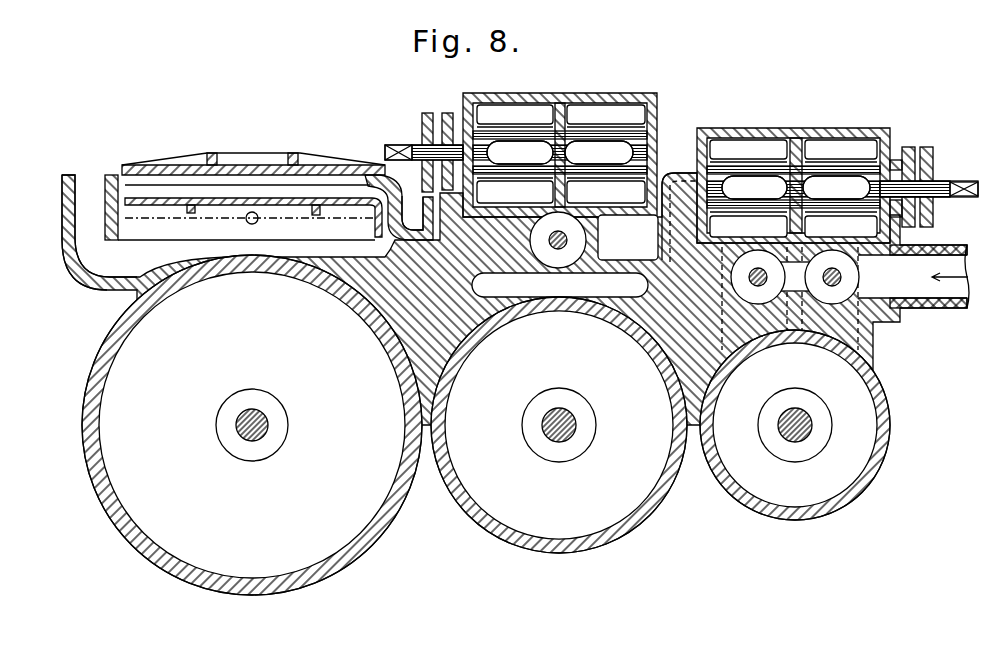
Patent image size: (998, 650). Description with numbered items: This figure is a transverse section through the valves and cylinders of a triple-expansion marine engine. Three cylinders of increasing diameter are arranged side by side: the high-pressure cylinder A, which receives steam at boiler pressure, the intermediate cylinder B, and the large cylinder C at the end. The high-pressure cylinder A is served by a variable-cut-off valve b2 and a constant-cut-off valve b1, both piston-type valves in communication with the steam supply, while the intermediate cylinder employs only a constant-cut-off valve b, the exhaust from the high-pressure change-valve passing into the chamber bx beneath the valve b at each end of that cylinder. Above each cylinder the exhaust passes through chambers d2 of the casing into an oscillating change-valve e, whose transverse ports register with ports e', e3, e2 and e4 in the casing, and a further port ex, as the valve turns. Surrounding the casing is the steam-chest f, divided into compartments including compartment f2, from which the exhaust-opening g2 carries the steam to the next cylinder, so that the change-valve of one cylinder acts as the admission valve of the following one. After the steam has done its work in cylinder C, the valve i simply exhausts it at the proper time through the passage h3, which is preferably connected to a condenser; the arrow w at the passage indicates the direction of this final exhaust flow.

The passage h3 is at (92, 190).
The valve i is at (253, 212).
The exhaust-opening g2 is at (683, 160).
The port ex is at (400, 148).
The steam-chest f is at (561, 103).
The compartment of steam-chest f2 is at (495, 113).
The chamber of casing d2 is at (677, 207).
The valve e is at (725, 146).
The port e2 is at (637, 170).
The port e4 is at (637, 170).
The port e' is at (717, 170).
The port e3 is at (717, 170).
The constant-cut-off valve b is at (578, 238).
The chamber bx is at (562, 287).
The constant-cut-off valve b1 is at (758, 277).
The variable-cut-off valve b2 is at (847, 277).
The belt direction w is at (959, 278).
The cylinder C is at (252, 425).
The low-pressure cylinder B is at (559, 425).
The high-pressure cylinder A is at (795, 425).